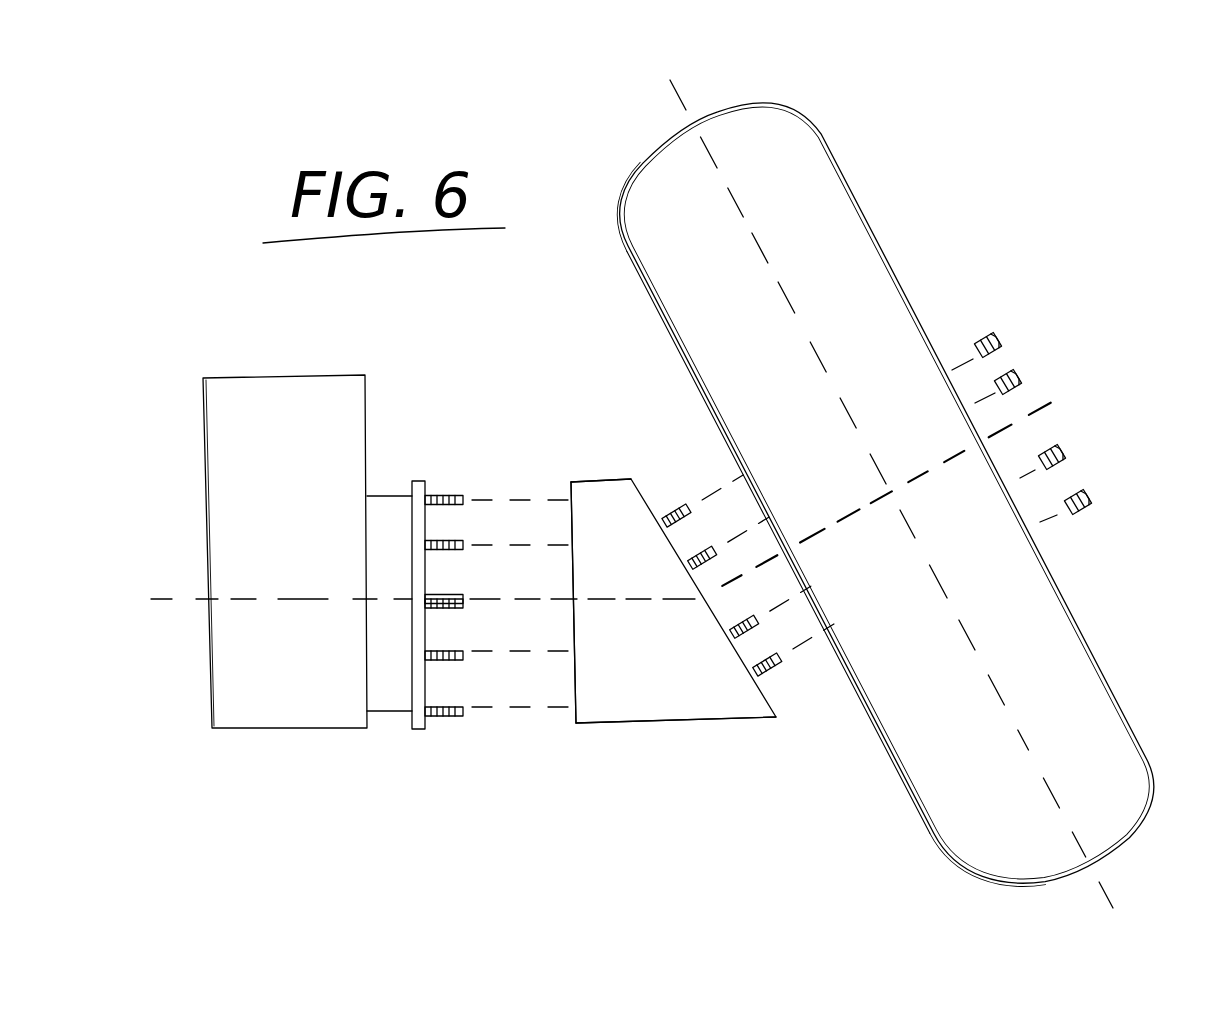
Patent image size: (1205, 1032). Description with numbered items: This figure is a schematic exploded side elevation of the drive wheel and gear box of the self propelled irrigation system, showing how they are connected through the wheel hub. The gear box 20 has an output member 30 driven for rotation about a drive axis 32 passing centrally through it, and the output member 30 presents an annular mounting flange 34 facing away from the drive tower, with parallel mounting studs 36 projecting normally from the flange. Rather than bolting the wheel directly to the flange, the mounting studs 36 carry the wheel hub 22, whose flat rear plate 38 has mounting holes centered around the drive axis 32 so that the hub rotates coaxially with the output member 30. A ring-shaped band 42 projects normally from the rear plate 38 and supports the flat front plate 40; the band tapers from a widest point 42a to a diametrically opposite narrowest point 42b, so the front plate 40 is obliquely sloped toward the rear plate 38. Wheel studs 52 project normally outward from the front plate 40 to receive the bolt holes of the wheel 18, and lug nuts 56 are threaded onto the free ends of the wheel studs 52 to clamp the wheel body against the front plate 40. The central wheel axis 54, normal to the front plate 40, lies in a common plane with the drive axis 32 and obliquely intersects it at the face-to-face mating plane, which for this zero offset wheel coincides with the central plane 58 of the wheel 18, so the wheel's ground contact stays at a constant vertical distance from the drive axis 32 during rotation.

The wheel 18 is at (848, 138).
The gear box 20 is at (353, 599).
The wheel hub 22 is at (687, 614).
The output member 30 is at (424, 682).
The drive axis 32 is at (168, 594).
The mounting flange 34 is at (422, 520).
The mounting studs 36 is at (465, 594).
The rear plate 38 is at (572, 666).
The front plate 40 is at (652, 500).
The band 42 is at (665, 698).
The widest point 42a is at (733, 724).
The narrowest point 42b is at (592, 481).
The wheel studs 52 is at (756, 628).
The central wheel axis 54 is at (802, 540).
The lug nuts 56 is at (1012, 368).
The central plane 58 is at (990, 700).